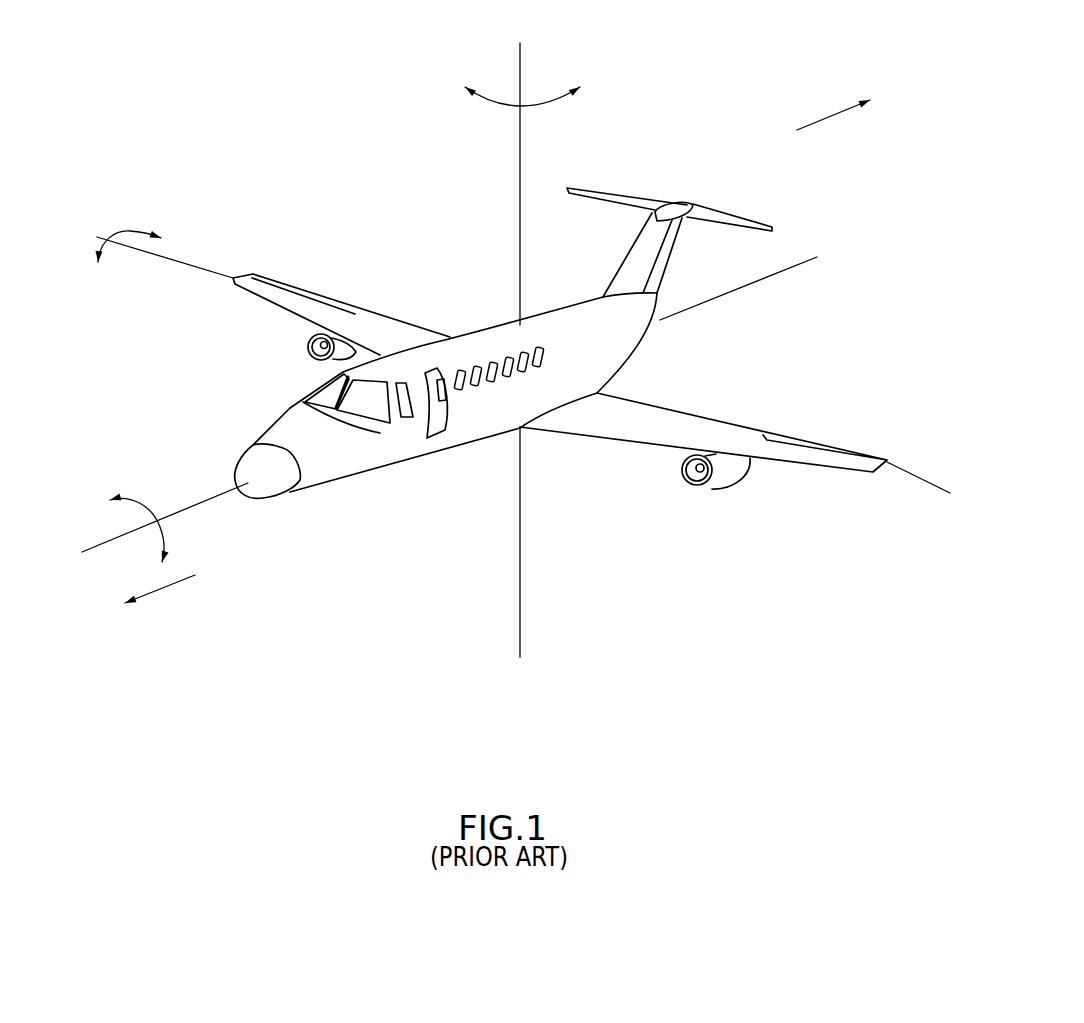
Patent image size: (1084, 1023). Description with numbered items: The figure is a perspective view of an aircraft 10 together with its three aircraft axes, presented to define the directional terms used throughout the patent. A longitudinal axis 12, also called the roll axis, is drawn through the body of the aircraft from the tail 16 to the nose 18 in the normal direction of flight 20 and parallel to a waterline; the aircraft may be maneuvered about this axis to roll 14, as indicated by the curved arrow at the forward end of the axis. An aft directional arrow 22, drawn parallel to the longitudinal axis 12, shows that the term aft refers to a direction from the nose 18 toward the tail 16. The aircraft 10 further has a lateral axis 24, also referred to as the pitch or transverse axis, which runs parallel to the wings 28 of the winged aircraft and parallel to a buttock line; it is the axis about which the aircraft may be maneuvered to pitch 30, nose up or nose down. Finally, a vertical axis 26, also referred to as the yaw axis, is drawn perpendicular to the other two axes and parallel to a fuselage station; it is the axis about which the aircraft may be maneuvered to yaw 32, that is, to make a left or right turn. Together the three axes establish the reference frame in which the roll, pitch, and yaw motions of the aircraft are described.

The aircraft 10 is at (630, 97).
The longitudinal axis 12 is at (743, 288).
The roll 14 is at (153, 503).
The tail 16 is at (702, 182).
The nose 18 is at (262, 420).
The normal direction of flight 20 is at (168, 588).
The aft directional arrow 22 is at (820, 118).
The lateral axis 24 is at (918, 483).
The vertical axis 26 is at (518, 205).
The wings 28 is at (282, 310).
The pitch 30 is at (126, 227).
The yaw 32 is at (500, 105).